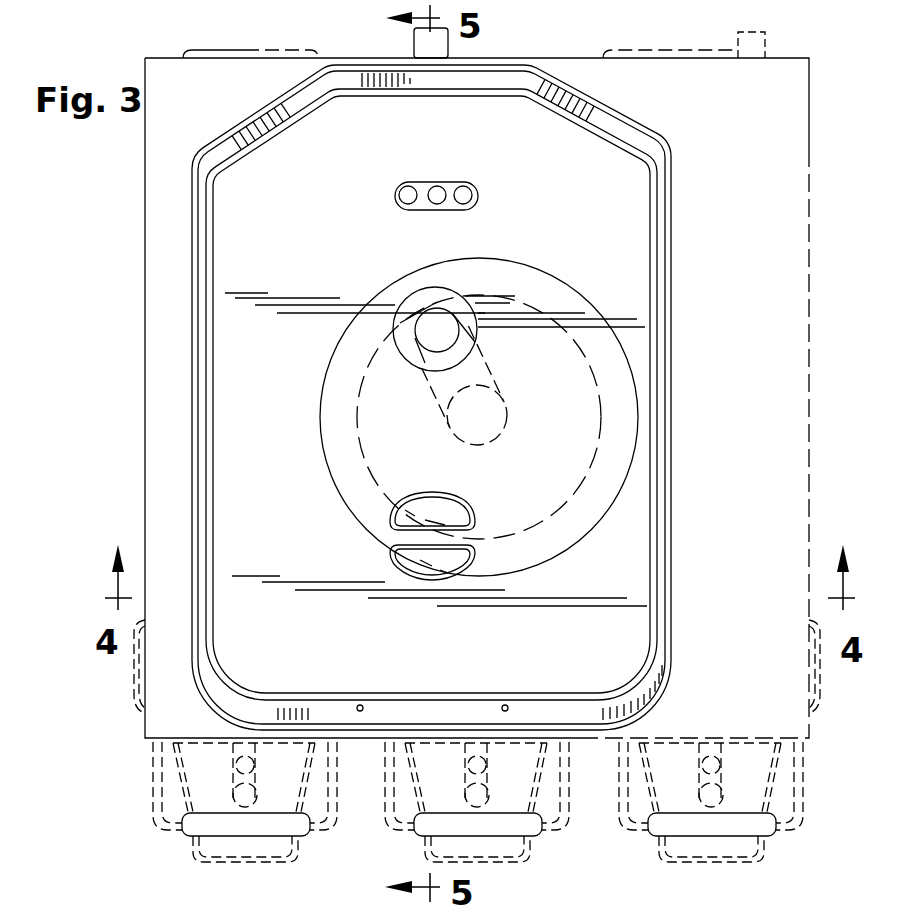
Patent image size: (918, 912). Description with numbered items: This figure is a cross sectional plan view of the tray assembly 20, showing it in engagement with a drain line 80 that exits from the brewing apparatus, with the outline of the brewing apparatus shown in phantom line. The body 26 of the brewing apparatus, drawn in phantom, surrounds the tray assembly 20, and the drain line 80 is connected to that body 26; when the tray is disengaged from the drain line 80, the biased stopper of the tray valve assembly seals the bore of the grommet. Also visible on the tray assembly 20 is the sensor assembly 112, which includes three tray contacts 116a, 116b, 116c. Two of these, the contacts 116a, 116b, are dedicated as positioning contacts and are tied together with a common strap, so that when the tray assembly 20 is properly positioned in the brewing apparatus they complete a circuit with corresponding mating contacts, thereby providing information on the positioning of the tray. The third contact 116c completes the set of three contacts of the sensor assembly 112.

The tray assembly 20 is at (700, 588).
The body 26 is at (147, 257).
The drain line 80 is at (414, 42).
The sensor assembly 112 is at (425, 195).
The positioning contact 116a is at (400, 206).
The positioning contact 116b is at (440, 205).
The tray contact 116c is at (478, 200).